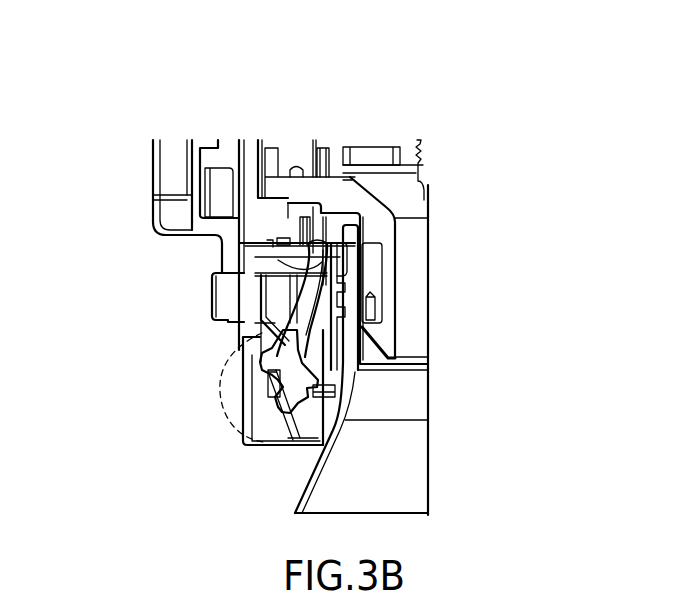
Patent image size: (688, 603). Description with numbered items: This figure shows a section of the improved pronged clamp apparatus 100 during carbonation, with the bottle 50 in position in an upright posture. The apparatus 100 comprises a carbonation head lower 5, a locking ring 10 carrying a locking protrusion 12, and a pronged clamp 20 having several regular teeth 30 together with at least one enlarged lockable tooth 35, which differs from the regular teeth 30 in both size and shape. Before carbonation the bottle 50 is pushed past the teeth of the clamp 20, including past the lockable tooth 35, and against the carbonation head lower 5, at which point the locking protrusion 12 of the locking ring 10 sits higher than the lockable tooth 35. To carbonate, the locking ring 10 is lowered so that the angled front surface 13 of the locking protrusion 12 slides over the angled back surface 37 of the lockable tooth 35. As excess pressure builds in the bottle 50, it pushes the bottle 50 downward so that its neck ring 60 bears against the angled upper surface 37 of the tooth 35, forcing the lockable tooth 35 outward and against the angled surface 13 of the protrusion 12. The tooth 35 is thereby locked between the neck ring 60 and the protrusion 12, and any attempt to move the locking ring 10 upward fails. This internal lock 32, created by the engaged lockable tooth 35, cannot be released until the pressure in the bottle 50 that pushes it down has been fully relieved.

The improved pronged clamp apparatus 100 is at (500, 153).
The carbonation head lower 5 is at (378, 201).
The pronged clamp 20 is at (250, 268).
The locking ring 10 is at (232, 297).
The locking protrusion 12 is at (244, 338).
The angled front surface 13 is at (262, 348).
The internal lock 32 is at (224, 406).
The lockable tooth 35 is at (262, 418).
The angled back surface 37 is at (300, 378).
The regular teeth 30 is at (320, 436).
The neck ring 60 is at (337, 367).
The bottle 50 is at (373, 477).